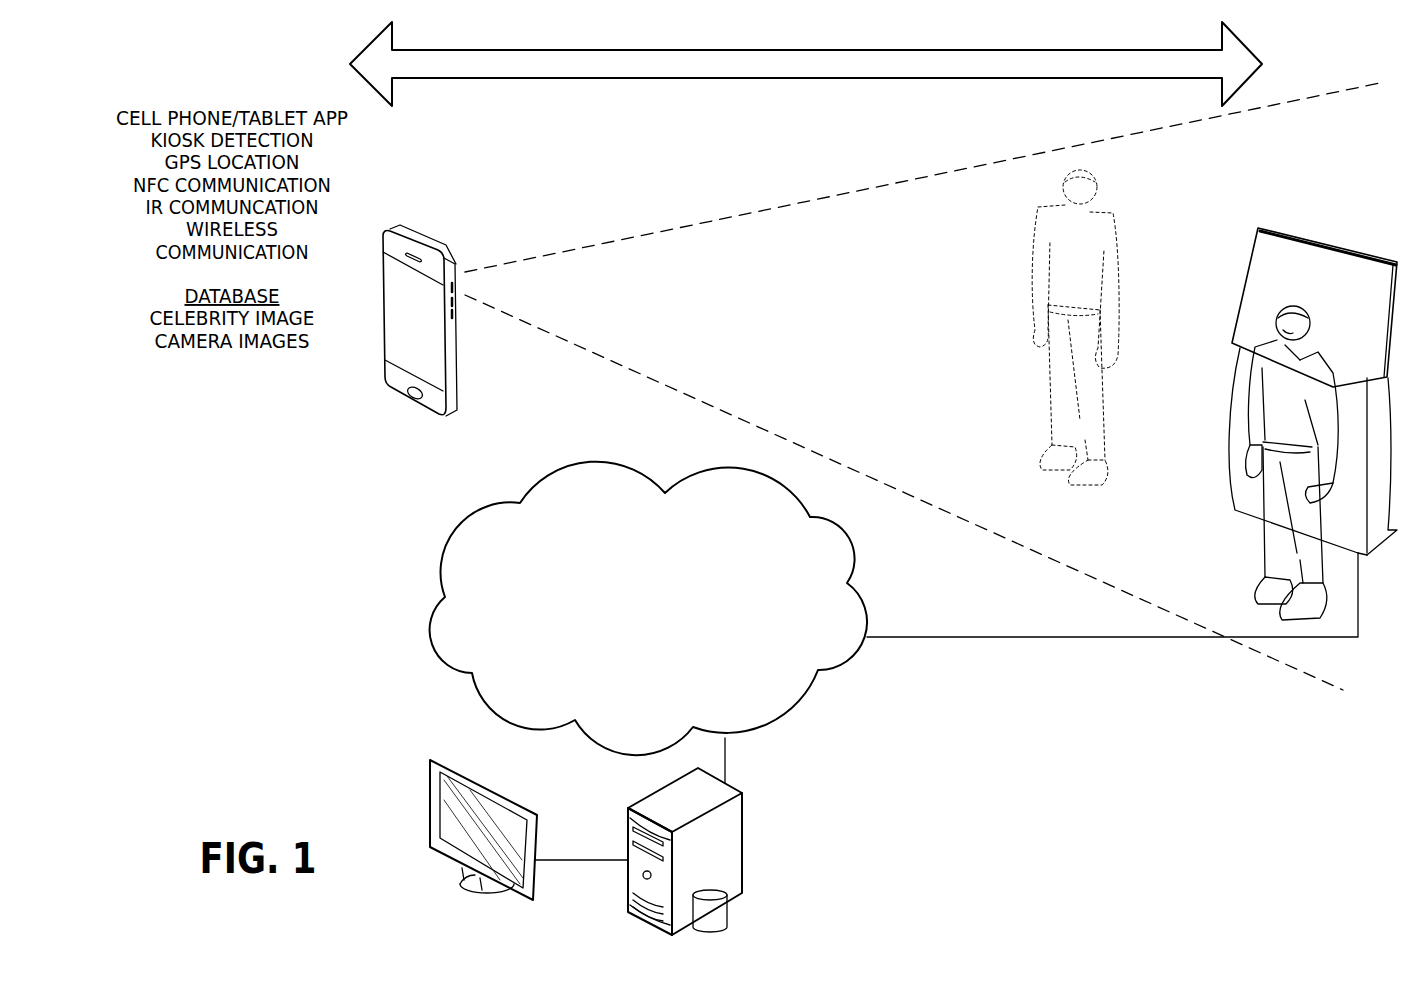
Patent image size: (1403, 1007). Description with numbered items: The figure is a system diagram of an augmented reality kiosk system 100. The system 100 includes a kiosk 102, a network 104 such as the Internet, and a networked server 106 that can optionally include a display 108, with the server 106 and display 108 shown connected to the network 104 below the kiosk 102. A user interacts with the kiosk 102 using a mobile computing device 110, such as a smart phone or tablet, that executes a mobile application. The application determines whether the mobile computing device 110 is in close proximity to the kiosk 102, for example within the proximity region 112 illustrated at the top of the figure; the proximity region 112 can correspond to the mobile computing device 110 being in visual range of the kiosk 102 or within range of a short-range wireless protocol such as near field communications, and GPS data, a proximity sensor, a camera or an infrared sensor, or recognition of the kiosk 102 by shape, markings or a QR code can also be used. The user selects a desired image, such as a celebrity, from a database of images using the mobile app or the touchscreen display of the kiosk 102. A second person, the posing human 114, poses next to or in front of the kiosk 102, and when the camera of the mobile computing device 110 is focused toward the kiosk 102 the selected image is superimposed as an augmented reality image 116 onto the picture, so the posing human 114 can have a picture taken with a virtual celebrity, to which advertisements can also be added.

The augmented reality kiosk system 100 is at (1322, 41).
The kiosk 102 is at (1250, 256).
The network 104 is at (563, 462).
The networked server 106 is at (748, 784).
The display 108 is at (430, 805).
The mobile computing device 110 is at (412, 232).
The proximity region 112 is at (765, 50).
The posing human 114 is at (1267, 553).
The augmented reality image 116 is at (1052, 360).